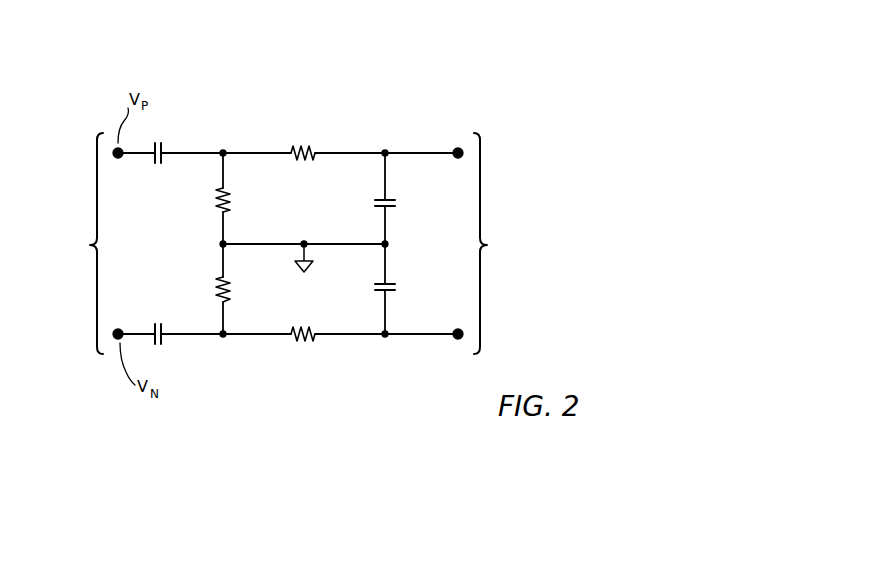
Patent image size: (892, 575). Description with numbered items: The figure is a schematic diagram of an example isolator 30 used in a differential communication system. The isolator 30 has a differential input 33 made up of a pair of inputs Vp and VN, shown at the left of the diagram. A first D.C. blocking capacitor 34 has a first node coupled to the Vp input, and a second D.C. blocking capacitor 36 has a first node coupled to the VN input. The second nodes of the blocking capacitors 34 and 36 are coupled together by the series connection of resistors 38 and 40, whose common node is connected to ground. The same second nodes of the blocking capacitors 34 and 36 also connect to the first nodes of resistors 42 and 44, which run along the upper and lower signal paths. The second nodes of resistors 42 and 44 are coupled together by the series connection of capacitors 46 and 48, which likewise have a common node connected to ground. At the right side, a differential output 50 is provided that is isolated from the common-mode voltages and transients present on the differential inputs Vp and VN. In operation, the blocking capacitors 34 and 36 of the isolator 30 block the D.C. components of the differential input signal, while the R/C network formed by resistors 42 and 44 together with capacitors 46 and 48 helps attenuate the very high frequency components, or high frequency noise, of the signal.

The isolator 30 is at (480, 86).
The differential input 33 is at (82, 243).
The first D.C. blocking capacitor 34 is at (158, 138).
The second D.C. blocking capacitor 36 is at (160, 350).
The resistor 38 is at (205, 200).
The resistor 40 is at (205, 283).
The resistor 42 is at (300, 138).
The resistor 44 is at (296, 348).
The capacitor 46 is at (400, 203).
The capacitor 48 is at (400, 287).
The differential output 50 is at (495, 243).